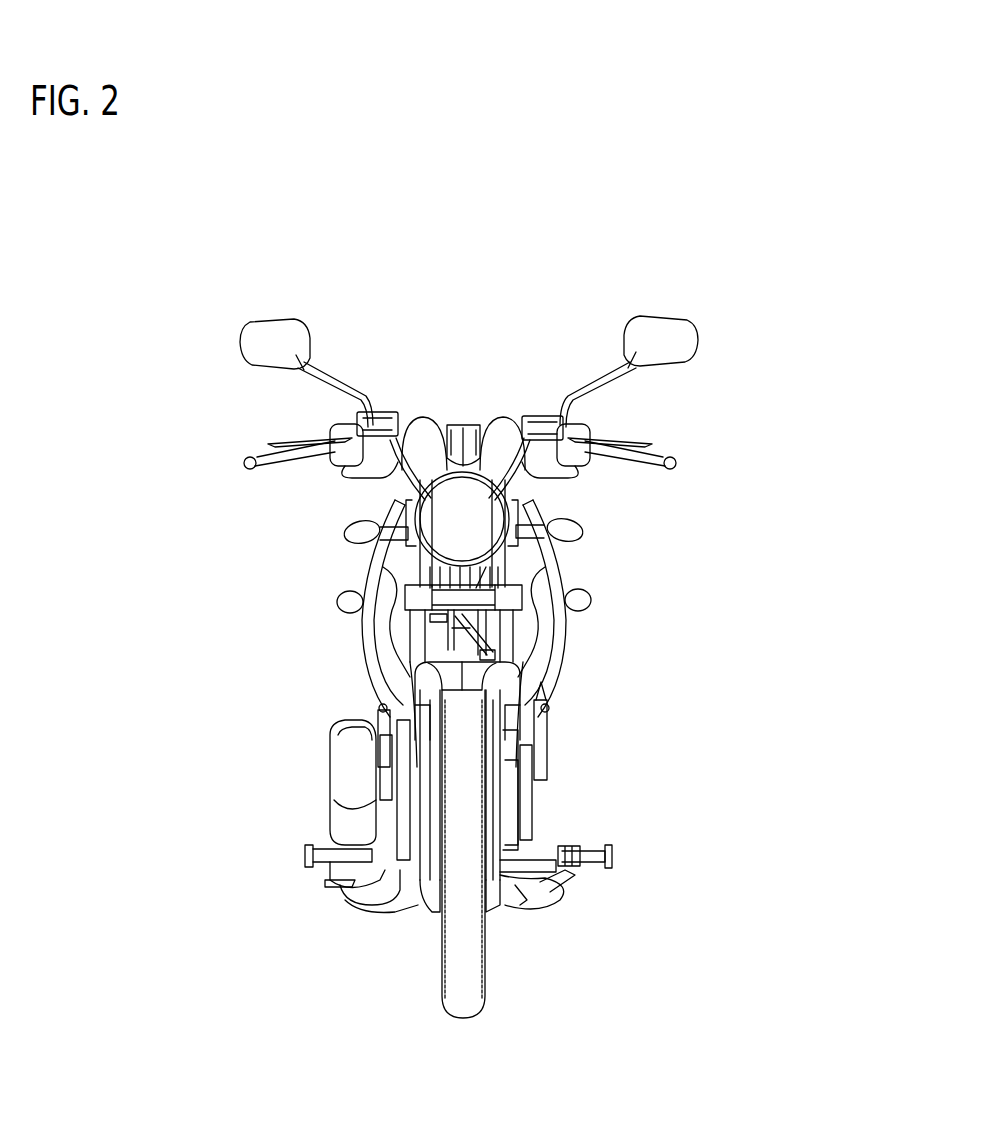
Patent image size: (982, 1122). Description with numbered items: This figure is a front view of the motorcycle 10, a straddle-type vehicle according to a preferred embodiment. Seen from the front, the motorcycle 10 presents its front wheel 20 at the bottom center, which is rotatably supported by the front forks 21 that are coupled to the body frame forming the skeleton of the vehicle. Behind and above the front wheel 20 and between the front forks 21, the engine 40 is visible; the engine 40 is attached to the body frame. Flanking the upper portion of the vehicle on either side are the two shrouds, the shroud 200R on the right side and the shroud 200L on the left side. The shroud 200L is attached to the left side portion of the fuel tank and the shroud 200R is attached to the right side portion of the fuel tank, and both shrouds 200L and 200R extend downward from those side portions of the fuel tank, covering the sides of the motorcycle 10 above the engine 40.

The motorcycle 10 is at (705, 256).
The shroud 200R is at (375, 572).
The shroud 200L is at (555, 568).
The front forks 21 is at (416, 646).
The engine 40 is at (522, 808).
The front wheel 20 is at (473, 968).